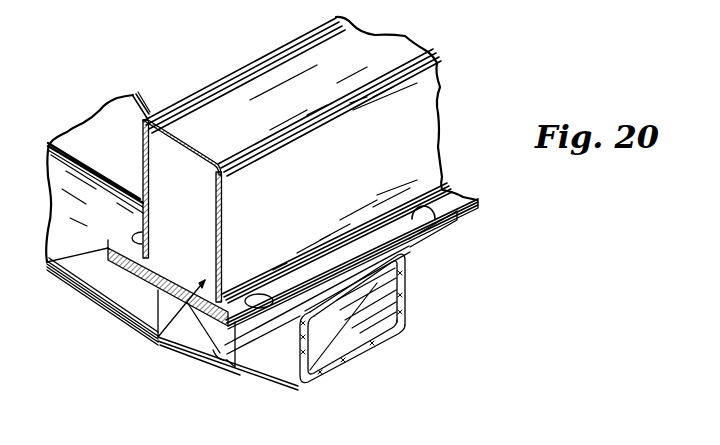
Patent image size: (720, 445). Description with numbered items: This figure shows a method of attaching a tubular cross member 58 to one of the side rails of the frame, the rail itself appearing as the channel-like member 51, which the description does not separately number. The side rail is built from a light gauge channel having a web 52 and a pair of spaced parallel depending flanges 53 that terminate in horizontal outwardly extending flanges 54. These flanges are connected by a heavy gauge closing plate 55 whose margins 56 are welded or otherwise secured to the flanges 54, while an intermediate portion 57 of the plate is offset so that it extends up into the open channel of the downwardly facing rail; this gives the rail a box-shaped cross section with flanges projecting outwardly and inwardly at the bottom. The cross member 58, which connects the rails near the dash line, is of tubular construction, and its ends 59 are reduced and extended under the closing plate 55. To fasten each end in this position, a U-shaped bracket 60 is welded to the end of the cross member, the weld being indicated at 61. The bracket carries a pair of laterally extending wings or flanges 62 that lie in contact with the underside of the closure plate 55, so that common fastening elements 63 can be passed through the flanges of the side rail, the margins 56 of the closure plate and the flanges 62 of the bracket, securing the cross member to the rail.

The box section 51 is at (398, 48).
The web 52 is at (190, 147).
The depending flanges 53 is at (143, 162).
The horizontal outwardly extending flanges 54 is at (453, 197).
The closing plate 55 is at (160, 337).
The margins 56 is at (183, 0).
The intermediate portion 57 is at (165, 277).
The cross member 58 is at (143, 93).
The ends 59 is at (367, 330).
The U-shaped brackets 60 is at (330, 370).
The weld 61 is at (407, 293).
The wings or flanges 62 is at (452, 233).
The fastening elements 63 is at (425, 214).